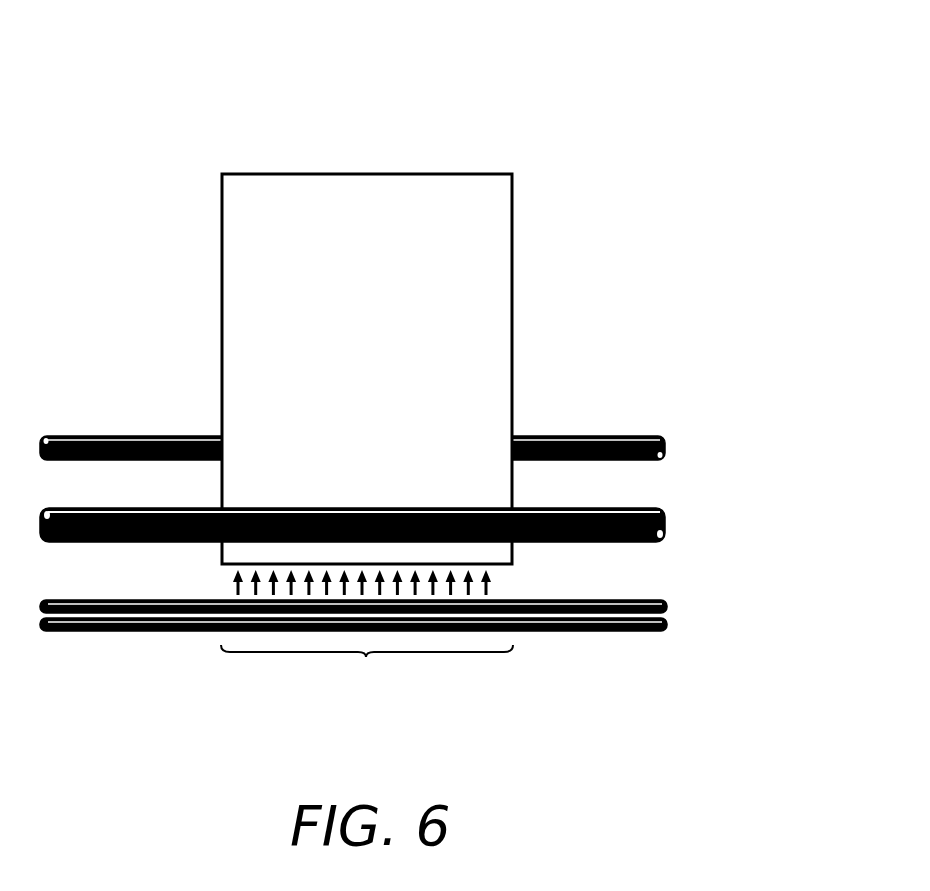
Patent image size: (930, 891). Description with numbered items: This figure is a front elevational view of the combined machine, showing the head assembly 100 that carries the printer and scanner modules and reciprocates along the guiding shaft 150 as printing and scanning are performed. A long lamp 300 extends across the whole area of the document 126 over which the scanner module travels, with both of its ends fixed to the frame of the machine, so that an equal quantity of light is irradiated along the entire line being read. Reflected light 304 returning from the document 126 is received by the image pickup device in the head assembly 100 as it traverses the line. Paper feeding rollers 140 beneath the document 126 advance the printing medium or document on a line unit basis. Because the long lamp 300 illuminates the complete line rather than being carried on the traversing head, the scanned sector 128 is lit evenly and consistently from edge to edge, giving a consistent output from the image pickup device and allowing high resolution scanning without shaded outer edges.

The head assembly 100 is at (398, 126).
The guiding shaft 150 is at (604, 437).
The long lamp 300 is at (637, 508).
The reflected light 304 is at (497, 587).
The paper feeding rollers 140 is at (667, 611).
The document 126 is at (627, 633).
The scanned sector 128 is at (367, 672).